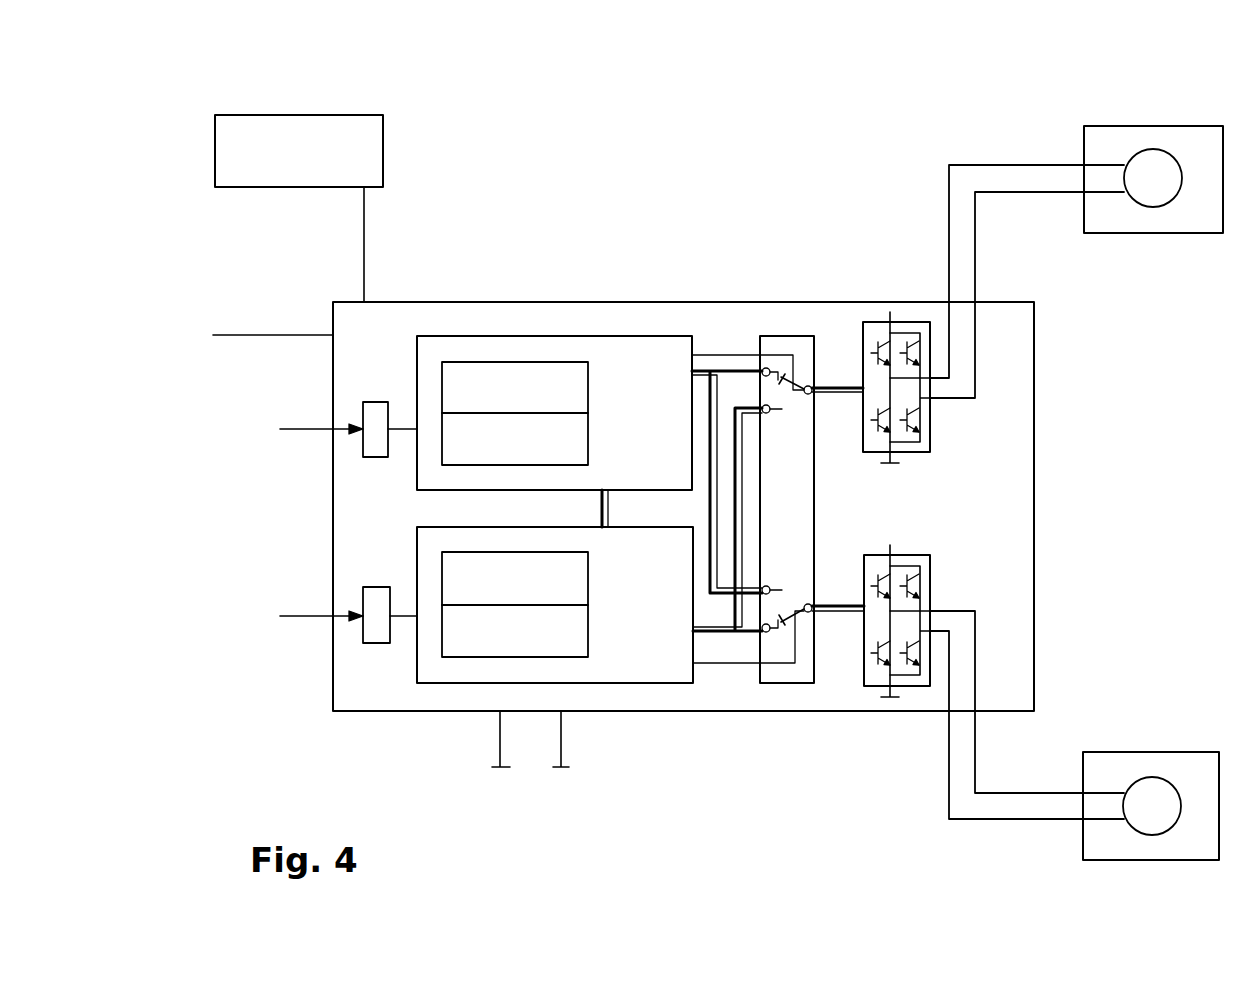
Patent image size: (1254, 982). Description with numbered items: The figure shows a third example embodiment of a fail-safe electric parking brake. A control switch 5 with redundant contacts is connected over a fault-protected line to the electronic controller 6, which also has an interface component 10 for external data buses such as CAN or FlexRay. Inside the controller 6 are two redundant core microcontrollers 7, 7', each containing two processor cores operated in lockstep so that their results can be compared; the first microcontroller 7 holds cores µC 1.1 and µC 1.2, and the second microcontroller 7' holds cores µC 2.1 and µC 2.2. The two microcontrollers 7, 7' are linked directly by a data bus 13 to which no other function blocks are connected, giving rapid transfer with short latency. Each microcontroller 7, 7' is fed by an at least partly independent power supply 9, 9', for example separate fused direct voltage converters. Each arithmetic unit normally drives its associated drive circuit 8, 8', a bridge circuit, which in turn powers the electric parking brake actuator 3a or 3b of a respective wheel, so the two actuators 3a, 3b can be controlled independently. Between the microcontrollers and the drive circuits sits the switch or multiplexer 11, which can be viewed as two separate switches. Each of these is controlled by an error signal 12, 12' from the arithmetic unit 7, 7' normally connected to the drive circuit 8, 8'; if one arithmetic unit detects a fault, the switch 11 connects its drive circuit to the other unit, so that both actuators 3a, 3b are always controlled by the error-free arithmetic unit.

The electric parking brake actuator 3a is at (1145, 126).
The electric parking brake actuator 3b is at (1145, 752).
The control switch 5 is at (290, 115).
The electronic controller 6 is at (637, 302).
The first redundant core microcontroller 7 is at (554, 369).
The second redundant core microcontroller 7' is at (555, 652).
The drive circuit 8 is at (930, 387).
The drive circuit 8' is at (935, 621).
The power supply 9 is at (348, 391).
The power supply 9' is at (348, 574).
The interface component 10 is at (243, 335).
The switch or multiplexer 11 is at (815, 505).
The error signal 12 is at (748, 431).
The error signal 12' is at (748, 582).
The data bus 13 is at (610, 508).